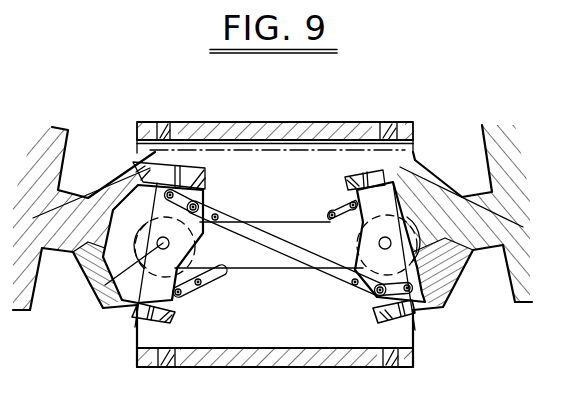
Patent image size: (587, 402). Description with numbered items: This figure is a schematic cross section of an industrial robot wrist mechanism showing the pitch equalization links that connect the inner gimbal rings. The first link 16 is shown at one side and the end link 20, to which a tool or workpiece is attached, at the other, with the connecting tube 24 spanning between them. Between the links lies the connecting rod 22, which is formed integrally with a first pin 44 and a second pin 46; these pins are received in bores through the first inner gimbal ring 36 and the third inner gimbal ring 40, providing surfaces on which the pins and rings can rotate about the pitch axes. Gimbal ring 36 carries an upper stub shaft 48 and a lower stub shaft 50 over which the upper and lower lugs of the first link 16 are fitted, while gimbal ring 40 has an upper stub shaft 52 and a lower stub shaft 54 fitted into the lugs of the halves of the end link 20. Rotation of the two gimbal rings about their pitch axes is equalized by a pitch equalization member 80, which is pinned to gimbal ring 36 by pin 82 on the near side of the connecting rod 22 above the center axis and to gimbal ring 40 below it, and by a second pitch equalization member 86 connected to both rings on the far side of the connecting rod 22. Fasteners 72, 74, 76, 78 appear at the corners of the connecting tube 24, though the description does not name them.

The first link 16 is at (98, 152).
The end link 20 is at (448, 156).
The connecting rod 22 is at (266, 265).
The connecting tube 24 is at (293, 122).
The first inner gimbal ring 36 is at (133, 184).
The third inner gimbal ring 40 is at (420, 291).
The first pin 44 is at (108, 280).
The second pin 46 is at (389, 240).
The upper stub shaft 48 is at (190, 168).
The lower stub shaft 50 is at (137, 318).
The upper stub shaft 52 is at (362, 170).
The lower stub shaft 54 is at (410, 318).
The top left bolt 72 is at (167, 123).
The bottom left bolt 74 is at (163, 368).
The top right bolt 76 is at (391, 122).
The bottom right bolt 78 is at (390, 368).
The pitch equalization member 80 is at (238, 222).
The pin 82 is at (190, 196).
The second pitch equalization member 86 is at (215, 272).